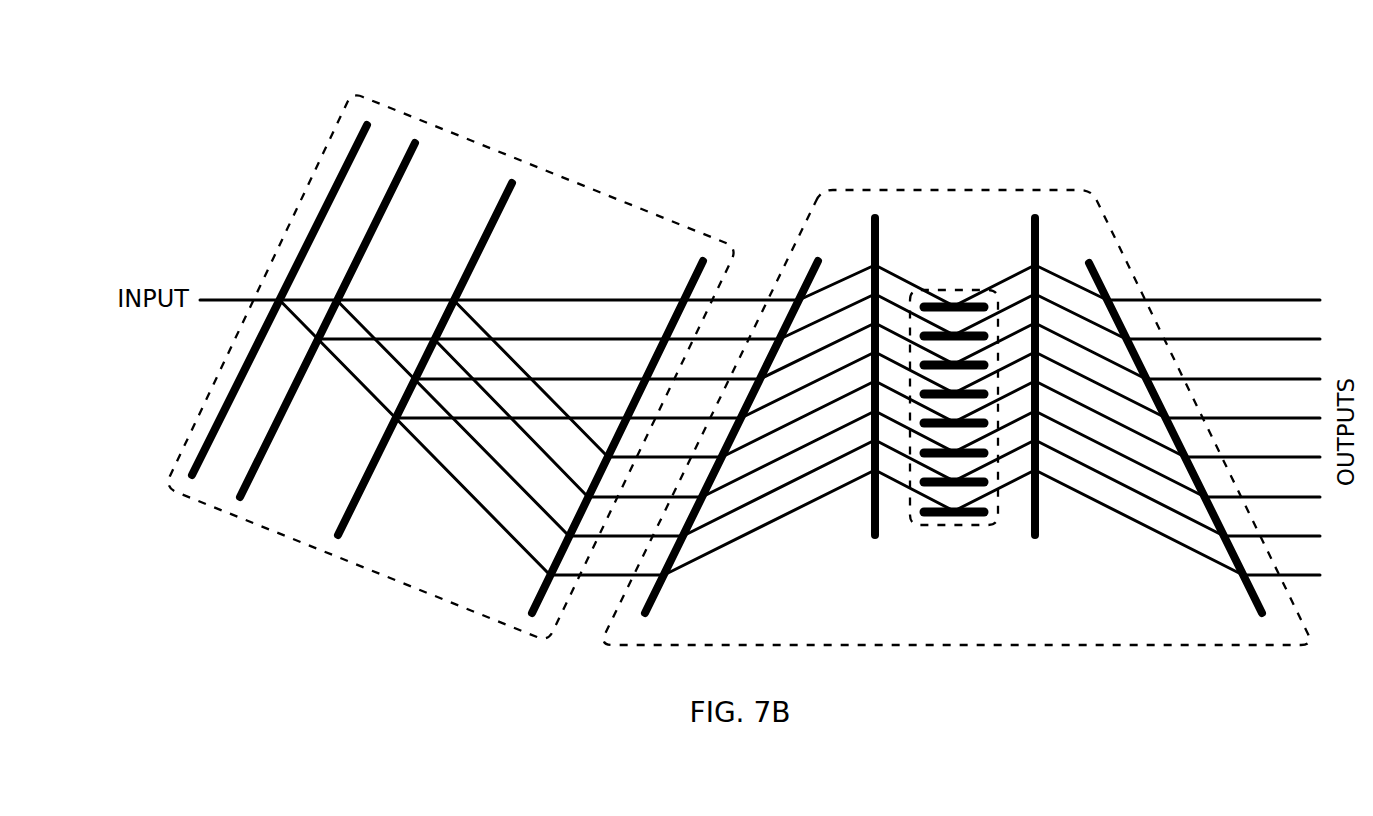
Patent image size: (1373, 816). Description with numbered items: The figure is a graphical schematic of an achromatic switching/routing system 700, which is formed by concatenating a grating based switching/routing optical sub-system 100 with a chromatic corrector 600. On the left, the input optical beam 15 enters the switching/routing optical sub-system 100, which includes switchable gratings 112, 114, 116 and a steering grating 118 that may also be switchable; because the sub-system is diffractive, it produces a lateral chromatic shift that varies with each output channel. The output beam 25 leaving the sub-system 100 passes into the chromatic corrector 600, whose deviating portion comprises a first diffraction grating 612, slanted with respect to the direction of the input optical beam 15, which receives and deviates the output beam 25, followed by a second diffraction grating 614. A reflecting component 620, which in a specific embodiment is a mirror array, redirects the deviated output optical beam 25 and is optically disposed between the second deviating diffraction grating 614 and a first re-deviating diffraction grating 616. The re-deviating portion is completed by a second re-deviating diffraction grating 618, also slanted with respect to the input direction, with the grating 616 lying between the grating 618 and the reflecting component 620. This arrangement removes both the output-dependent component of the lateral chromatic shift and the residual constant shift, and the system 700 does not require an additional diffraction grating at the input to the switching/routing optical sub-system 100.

The input optical beam 15 is at (229, 297).
The output beam 25 is at (1226, 419).
The grating based switching/routing optical sub-system 100 is at (360, 573).
The switchable grating 112 is at (357, 136).
The switchable grating 114 is at (410, 152).
The switchable grating 116 is at (505, 193).
The steering grating 118 is at (700, 269).
The chromatic corrector 600 is at (880, 647).
The first diffraction grating 612 is at (806, 275).
The second diffraction grating 614 is at (878, 240).
The first re-deviating diffraction grating 616 is at (1032, 240).
The second re-deviating diffraction grating 618 is at (1105, 276).
The reflecting component 620 is at (905, 522).
The achromatic switching/routing system 700 is at (192, 637).